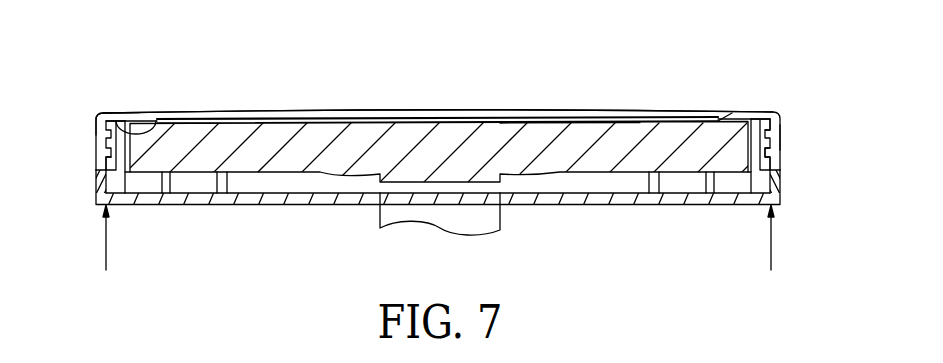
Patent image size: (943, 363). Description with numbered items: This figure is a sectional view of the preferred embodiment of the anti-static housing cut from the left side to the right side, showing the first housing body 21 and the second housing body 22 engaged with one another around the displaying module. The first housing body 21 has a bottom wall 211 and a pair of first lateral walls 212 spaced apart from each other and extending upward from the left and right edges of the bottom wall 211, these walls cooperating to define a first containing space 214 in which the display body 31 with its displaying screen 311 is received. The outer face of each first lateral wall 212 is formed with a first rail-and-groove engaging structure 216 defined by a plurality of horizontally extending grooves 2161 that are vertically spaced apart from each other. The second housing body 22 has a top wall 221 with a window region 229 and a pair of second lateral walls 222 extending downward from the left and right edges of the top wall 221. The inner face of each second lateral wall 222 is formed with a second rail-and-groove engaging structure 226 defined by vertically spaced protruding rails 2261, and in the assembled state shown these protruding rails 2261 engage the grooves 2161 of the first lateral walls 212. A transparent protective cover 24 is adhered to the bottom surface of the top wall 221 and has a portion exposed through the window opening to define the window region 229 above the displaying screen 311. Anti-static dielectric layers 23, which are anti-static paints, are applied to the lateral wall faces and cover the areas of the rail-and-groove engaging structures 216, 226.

The first housing body 21 is at (597, 198).
The bottom wall 211 is at (298, 199).
The first lateral walls 212 is at (112, 190).
The first containing space 214 is at (190, 185).
The first rail-and-groove engaging structure 216 is at (148, 126).
The second housing body 22 is at (742, 113).
The top wall 221 is at (132, 116).
The second lateral walls 222 is at (105, 129).
The second rail-and-groove engaging structure 226 is at (105, 162).
The window region 229 is at (488, 112).
The grooves 2161 is at (773, 146).
The protruding rails 2261 is at (764, 116).
The anti-static dielectric layers 23 is at (105, 182).
The transparent protective cover 24 is at (292, 119).
The display body 31 is at (397, 145).
The displaying screen 311 is at (565, 127).